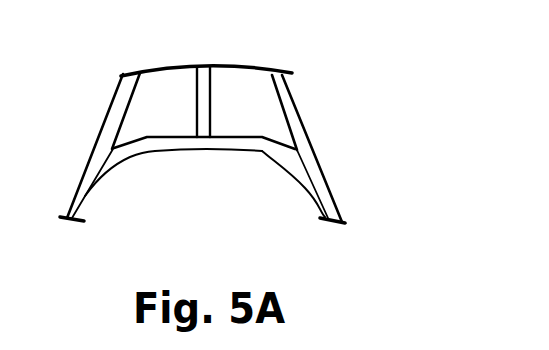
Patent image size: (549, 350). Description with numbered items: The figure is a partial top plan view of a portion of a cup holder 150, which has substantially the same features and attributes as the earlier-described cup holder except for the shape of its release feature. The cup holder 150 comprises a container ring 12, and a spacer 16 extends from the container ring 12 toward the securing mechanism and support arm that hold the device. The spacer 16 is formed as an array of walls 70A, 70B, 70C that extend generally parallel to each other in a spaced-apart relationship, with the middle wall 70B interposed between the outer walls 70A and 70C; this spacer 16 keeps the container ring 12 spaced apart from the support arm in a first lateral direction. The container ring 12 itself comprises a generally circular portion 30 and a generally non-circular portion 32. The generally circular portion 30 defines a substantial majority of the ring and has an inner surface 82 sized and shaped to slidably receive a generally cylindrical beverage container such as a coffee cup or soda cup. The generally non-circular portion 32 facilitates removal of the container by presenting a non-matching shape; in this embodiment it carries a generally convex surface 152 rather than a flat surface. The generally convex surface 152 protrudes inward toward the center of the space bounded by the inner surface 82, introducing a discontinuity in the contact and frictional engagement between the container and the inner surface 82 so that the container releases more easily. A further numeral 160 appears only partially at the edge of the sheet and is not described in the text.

The container ring 12 is at (337, 196).
The spacer 16 is at (288, 82).
The generally circular portion 30 is at (304, 192).
The generally non-circular portion 32 is at (234, 149).
The wall 70A is at (115, 95).
The wall 70B is at (212, 112).
The wall 70C is at (302, 122).
The inner surface 82 is at (88, 189).
The cup holder 150 is at (343, 159).
The generally convex surface 152 is at (198, 152).
The adjacent figure element (clipped) 160 is at (425, 345).